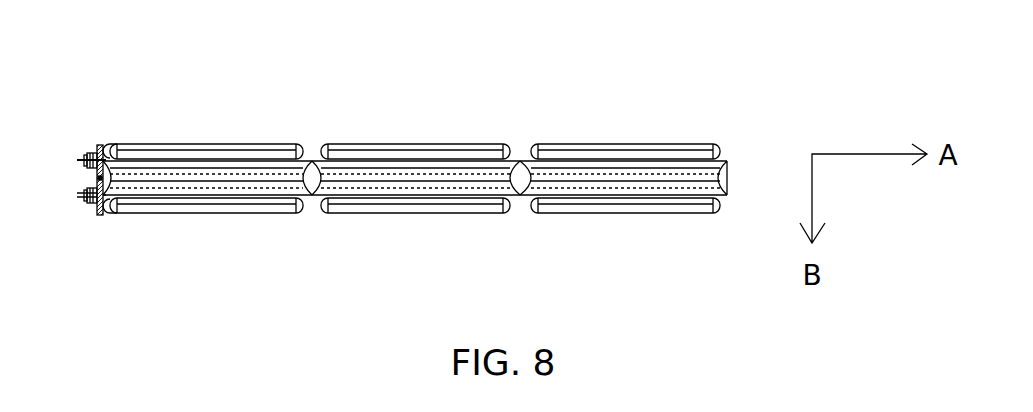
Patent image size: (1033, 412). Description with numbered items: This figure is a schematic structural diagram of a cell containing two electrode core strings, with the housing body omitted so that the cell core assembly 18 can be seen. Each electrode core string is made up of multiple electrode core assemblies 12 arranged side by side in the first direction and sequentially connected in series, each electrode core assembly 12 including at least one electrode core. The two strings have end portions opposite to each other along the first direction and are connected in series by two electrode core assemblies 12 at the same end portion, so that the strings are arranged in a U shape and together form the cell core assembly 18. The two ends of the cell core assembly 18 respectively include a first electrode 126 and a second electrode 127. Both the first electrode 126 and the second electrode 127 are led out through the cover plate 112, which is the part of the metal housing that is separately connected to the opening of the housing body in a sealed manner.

The cell core assembly 18 is at (705, 51).
The electrode core assembly 12 is at (198, 148).
The cover plate 112 is at (95, 148).
The first electrode 126 is at (112, 205).
The second electrode 127 is at (113, 153).